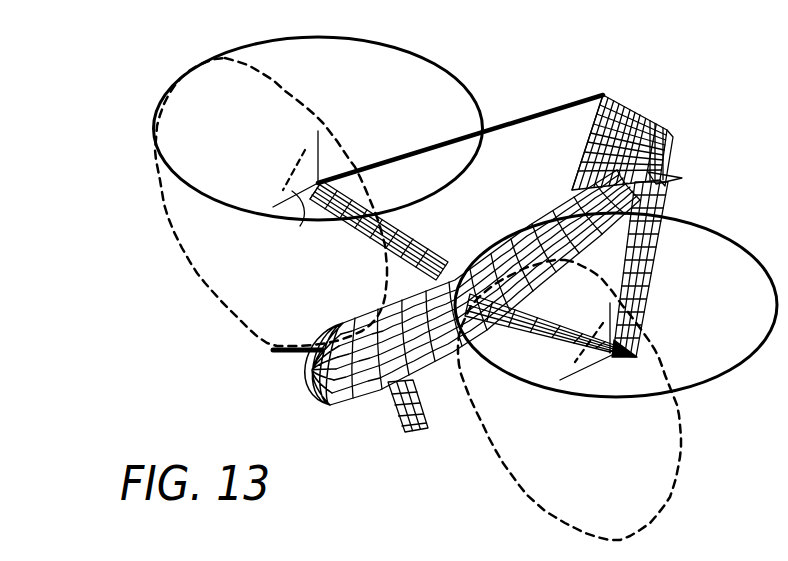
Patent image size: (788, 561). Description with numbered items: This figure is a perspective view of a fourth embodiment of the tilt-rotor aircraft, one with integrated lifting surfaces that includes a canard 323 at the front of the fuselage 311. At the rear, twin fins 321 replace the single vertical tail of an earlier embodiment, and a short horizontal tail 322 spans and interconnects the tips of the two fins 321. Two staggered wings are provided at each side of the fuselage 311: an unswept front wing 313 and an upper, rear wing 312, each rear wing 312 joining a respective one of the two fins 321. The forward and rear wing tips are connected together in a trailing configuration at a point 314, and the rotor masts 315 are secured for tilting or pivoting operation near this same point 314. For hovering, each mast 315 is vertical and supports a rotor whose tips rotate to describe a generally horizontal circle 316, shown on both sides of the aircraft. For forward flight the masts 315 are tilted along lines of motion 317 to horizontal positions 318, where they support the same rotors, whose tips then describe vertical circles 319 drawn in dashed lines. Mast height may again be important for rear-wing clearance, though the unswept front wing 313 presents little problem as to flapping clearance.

The fuselage 311 is at (430, 370).
The upper rear wing 312 is at (455, 142).
The front wing 313 is at (378, 238).
The wing tip connection point 314 is at (331, 166).
The rotor mast 315 is at (318, 131).
The horizontal rotor circle 316 is at (437, 67).
The line of motion 317 is at (295, 166).
The horizontal mast position 318 is at (302, 222).
The vertical rotor circle 319 is at (214, 292).
The fin 321 is at (578, 146).
The horizontal tail 322 is at (665, 96).
The canard 323 is at (397, 425).